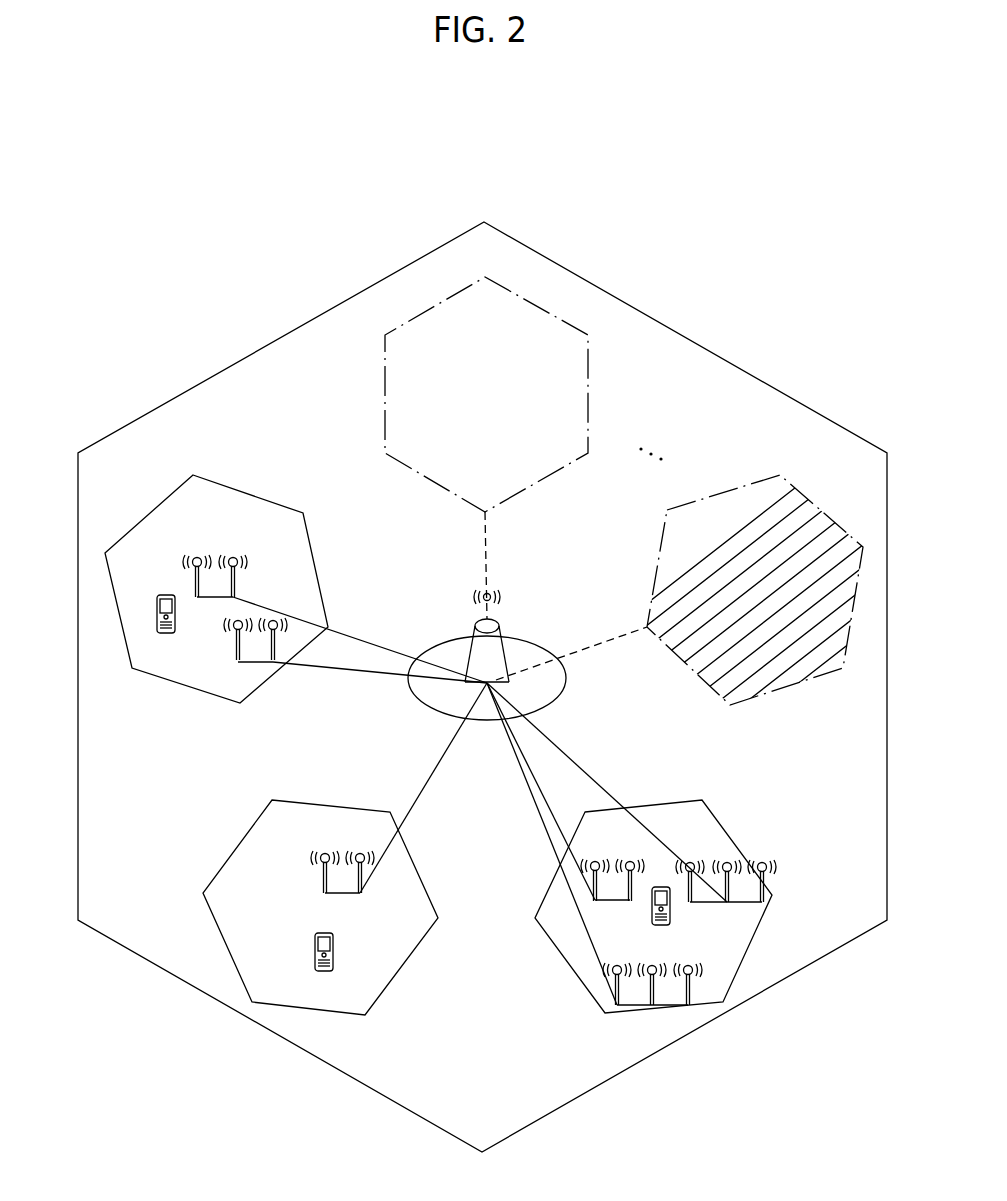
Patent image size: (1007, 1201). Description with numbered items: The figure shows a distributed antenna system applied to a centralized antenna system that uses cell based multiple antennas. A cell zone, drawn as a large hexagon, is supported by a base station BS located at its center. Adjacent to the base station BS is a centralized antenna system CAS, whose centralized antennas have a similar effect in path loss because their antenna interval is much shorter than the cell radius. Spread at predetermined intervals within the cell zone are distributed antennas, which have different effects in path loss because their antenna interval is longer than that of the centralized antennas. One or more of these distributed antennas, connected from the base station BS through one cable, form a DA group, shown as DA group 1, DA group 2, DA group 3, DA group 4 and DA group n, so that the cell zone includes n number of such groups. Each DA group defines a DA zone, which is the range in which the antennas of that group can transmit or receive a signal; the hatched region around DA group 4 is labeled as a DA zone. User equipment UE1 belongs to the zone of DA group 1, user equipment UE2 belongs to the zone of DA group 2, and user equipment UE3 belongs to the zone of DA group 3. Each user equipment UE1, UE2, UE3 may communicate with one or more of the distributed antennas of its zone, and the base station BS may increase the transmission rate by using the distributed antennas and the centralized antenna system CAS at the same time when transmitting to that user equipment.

The base station BS is at (487, 597).
The centralized antenna system CAS is at (487, 678).
The user equipment UE1 is at (163, 628).
The user equipment UE2 is at (323, 966).
The user equipment UE3 is at (659, 920).
The DA group DA group 1 is at (216, 589).
The DA group DA group 2 is at (320, 907).
The DA group DA group 3 is at (655, 906).
The DA group DA group 4 is at (750, 655).
The DA group DA group n is at (486, 394).
The element DA zone is at (753, 697).